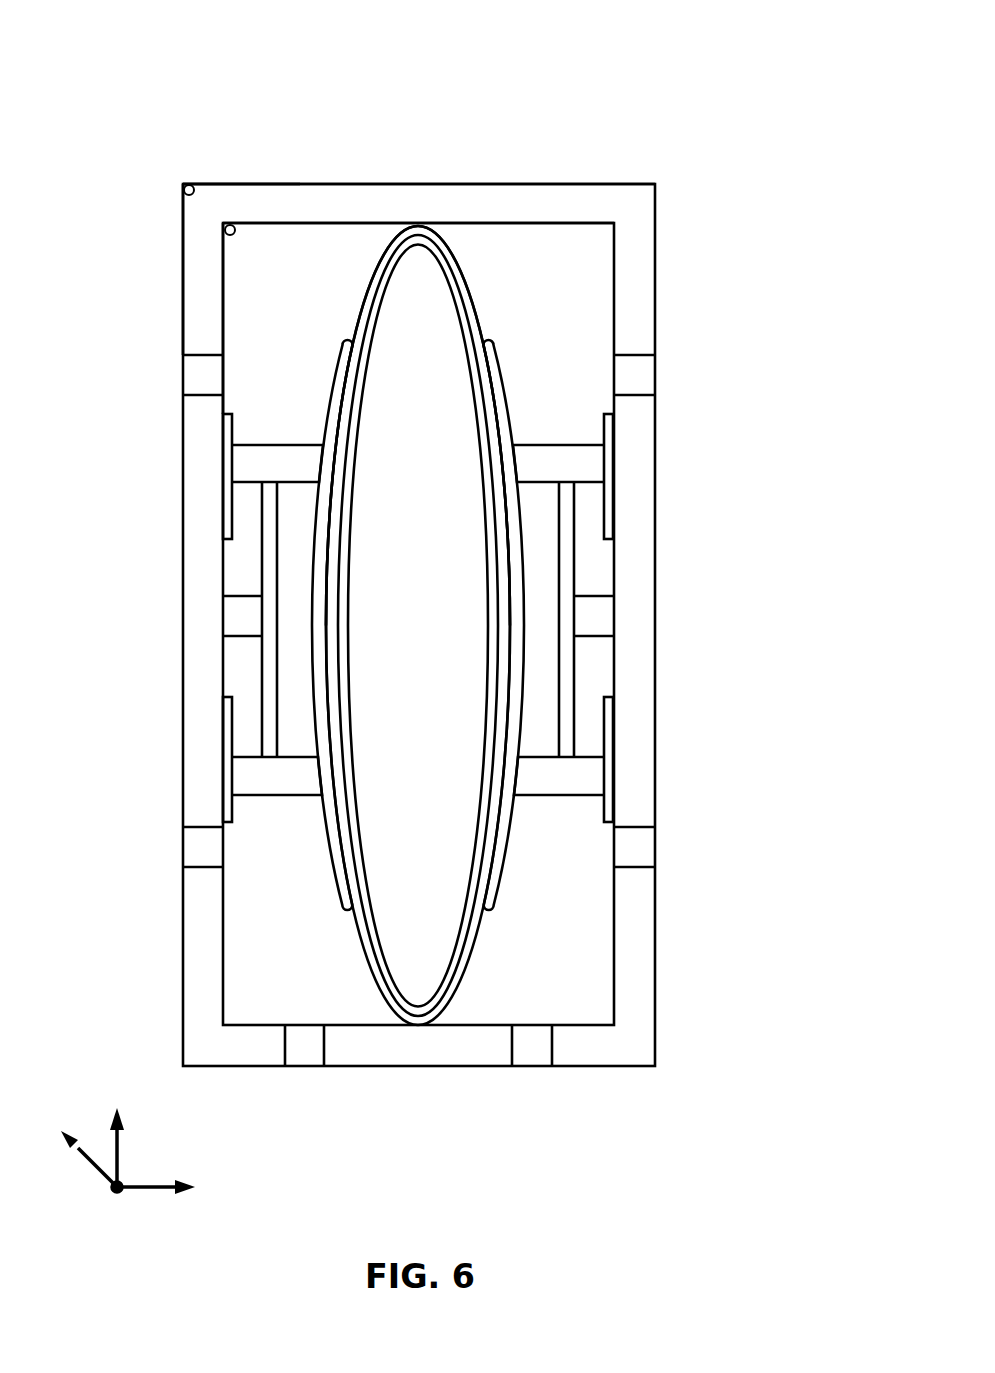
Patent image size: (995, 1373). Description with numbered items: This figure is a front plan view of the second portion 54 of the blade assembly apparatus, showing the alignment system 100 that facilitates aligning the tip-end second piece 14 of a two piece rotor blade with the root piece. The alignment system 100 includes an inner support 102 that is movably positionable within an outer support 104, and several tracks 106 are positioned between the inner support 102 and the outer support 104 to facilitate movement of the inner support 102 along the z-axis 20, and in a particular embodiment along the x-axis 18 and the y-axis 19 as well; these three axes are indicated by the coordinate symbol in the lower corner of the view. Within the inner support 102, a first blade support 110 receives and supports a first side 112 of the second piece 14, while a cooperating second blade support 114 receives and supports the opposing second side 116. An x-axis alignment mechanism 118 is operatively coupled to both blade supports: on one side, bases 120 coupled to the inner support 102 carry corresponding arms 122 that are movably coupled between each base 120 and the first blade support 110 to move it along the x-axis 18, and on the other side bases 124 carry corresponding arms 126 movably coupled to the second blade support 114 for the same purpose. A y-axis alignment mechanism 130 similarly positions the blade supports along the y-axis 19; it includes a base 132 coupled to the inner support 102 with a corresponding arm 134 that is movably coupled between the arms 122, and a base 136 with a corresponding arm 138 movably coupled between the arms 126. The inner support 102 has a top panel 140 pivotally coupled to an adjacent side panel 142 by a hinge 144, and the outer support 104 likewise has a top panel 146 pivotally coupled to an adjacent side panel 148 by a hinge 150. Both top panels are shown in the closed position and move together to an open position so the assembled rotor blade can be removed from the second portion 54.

The alignment system 100 is at (245, 45).
The inner support 102 is at (615, 258).
The outer support 104 is at (655, 200).
The tracks 106 is at (190, 380).
The second portion 54 is at (418, 184).
The second piece 14 is at (445, 322).
The first blade support 110 is at (333, 355).
The first side 112 is at (383, 258).
The second blade support 114 is at (505, 367).
The second side 116 is at (451, 253).
The x-axis alignment mechanism 118 is at (422, 623).
The bases 120 is at (225, 437).
The arm 122 is at (268, 443).
The bases 124 is at (608, 437).
The arm 126 is at (563, 443).
The y-axis alignment mechanism 130 is at (423, 619).
The base 132 is at (225, 615).
The arm 134 is at (262, 655).
The base 136 is at (610, 615).
The arm 138 is at (570, 655).
The top panel 140 is at (500, 223).
The side panel 142 is at (222, 258).
The hinge 144 is at (238, 226).
The top panel 146 is at (236, 184).
The side panel 148 is at (183, 208).
The hinge 150 is at (186, 184).
The x-axis 18 is at (145, 1187).
The y-axis 19 is at (117, 1152).
The z-axis 20 is at (93, 1168).